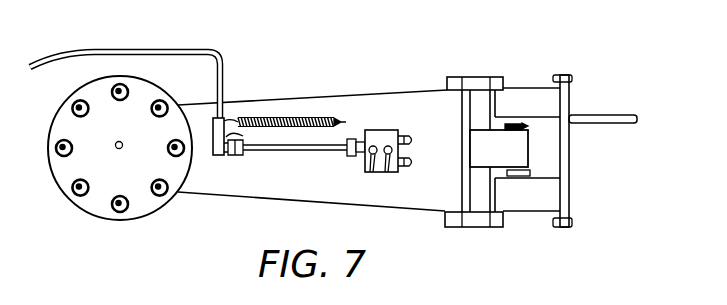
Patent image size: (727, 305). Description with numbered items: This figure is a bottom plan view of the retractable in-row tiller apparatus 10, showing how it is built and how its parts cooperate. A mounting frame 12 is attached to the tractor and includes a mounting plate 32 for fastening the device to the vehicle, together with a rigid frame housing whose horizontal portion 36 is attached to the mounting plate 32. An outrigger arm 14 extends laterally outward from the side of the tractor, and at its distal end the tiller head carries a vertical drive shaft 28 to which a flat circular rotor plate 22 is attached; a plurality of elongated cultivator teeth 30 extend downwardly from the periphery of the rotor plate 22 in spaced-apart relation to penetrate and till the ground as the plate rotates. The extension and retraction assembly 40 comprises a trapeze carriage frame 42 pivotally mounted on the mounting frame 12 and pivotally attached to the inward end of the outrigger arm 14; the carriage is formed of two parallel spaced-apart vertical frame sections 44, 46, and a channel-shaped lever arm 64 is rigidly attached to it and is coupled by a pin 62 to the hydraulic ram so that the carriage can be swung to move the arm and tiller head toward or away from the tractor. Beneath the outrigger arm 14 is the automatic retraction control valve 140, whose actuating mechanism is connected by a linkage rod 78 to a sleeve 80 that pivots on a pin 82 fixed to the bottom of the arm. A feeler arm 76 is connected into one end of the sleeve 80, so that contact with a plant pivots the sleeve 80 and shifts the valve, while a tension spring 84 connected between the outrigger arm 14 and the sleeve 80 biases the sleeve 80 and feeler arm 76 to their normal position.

The retractable tiller apparatus 10 is at (404, 74).
The mounting frame 12 is at (523, 222).
The outrigger arm 14 is at (356, 94).
The rotor plate 22 is at (48, 159).
The drive shaft 28 is at (122, 143).
The cultivator teeth 30 is at (128, 208).
The mounting plate 32 is at (596, 115).
The horizontal portion 36 is at (520, 88).
The extension and retraction assembly 40 is at (472, 231).
The trapeze carriage frame 42 is at (470, 74).
The vertical frame section 44 is at (483, 77).
The vertical frame section 46 is at (483, 228).
The pin 62 is at (517, 124).
The lever arm 64 is at (505, 160).
The feeler arm 76 is at (137, 52).
The linkage rod 78 is at (314, 151).
The sleeve 80 is at (205, 146).
The pin 82 is at (246, 153).
The tension spring 84 is at (276, 117).
The automatic retraction control valve 140 is at (382, 130).